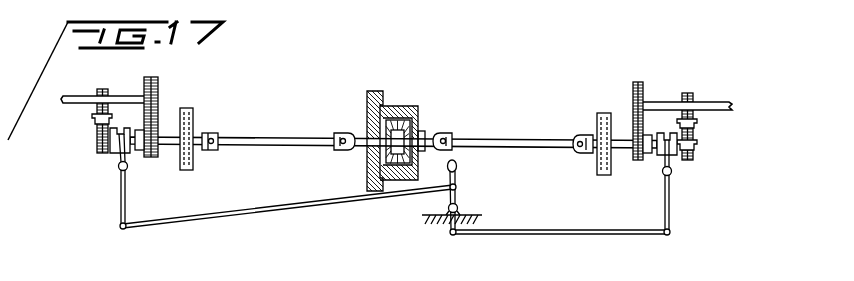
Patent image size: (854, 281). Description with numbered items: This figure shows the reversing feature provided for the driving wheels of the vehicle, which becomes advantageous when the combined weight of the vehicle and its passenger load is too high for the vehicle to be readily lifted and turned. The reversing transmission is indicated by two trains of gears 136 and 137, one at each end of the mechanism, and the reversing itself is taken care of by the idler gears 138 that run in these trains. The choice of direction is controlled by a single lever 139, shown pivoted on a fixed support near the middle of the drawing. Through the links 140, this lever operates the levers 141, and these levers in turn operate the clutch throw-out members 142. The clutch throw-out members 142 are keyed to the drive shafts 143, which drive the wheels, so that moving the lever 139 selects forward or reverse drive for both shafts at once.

The train of gears 136 is at (157, 83).
The train of gears 137 is at (640, 82).
The idler gear 138 is at (97, 121).
The lever 139 is at (458, 170).
The link 140 is at (285, 210).
The lever 141 is at (125, 193).
The clutch throw-out member 142 is at (115, 152).
The drive shaft 143 is at (245, 140).